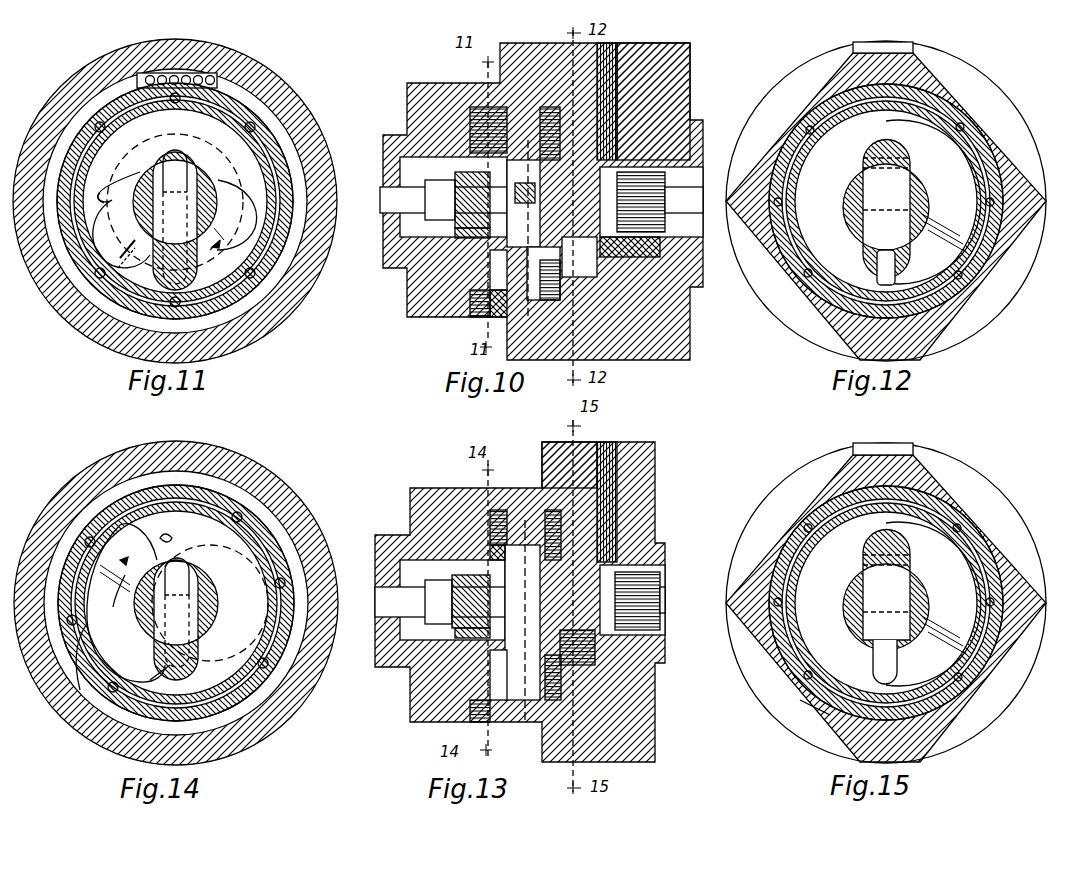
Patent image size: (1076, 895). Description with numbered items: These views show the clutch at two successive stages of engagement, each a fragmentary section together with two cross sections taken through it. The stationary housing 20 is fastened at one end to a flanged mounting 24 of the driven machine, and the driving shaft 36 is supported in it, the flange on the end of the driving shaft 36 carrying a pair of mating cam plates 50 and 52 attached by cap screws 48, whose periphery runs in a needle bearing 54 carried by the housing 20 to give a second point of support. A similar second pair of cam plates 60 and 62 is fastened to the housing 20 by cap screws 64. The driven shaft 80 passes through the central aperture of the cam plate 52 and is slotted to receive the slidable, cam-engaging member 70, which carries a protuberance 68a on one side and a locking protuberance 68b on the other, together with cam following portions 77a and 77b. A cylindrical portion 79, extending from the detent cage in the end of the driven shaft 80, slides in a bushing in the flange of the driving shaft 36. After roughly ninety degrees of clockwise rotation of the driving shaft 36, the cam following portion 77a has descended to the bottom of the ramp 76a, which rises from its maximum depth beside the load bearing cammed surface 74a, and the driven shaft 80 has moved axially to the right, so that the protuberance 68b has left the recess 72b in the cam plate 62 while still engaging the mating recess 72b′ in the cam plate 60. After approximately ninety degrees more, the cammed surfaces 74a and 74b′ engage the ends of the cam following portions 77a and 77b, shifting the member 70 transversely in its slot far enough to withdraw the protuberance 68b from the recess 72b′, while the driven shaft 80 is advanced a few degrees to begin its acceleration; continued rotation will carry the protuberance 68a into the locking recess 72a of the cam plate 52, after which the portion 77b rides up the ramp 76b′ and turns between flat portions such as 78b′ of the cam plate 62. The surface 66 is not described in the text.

In FIG. 11, the housing 20 is at (263, 102).
In FIG. 10, the housing 20 is at (505, 50).
In FIG. 12, the housing 20 is at (818, 95).
In FIG. 14, the housing 20 is at (238, 470).
In FIG. 13, the housing 20 is at (650, 510).
In FIG. 10, the flanged mounting 24 is at (676, 72).
In FIG. 12, the flanged mounting 24 is at (1012, 150).
In FIG. 15, the flanged mounting 24 is at (1010, 522).
In FIG. 10, the driving shaft 36 is at (412, 305).
In FIG. 13, the driving shaft 36 is at (412, 706).
In FIG. 11, the cap screws 48 is at (100, 127).
In FIG. 14, the cap screws 48 is at (240, 515).
In FIG. 11, the cam plate 50 is at (118, 118).
In FIG. 10, the cam plate 50 is at (470, 290).
In FIG. 14, the cam plate 50 is at (280, 530).
In FIG. 13, the cam plate 50 is at (470, 488).
In FIG. 11, the cam plate 52 is at (268, 140).
In FIG. 10, the cam plate 52 is at (505, 305).
In FIG. 14, the cam plate 52 is at (278, 562).
In FIG. 13, the cam plate 52 is at (505, 495).
In FIG. 11, the needle bearing 54 is at (218, 78).
In FIG. 10, the cam plate 60 is at (640, 240).
In FIG. 12, the cam plate 60 is at (960, 140).
In FIG. 13, the cam plate 60 is at (625, 475).
In FIG. 15, the cam plate 60 is at (898, 500).
In FIG. 10, the cam plate 62 is at (600, 300).
In FIG. 12, the cam plate 62 is at (918, 108).
In FIG. 13, the cam plate 62 is at (560, 470).
In FIG. 12, the cap screws 64 is at (940, 125).
In FIG. 15, the cap screws 64 is at (975, 540).
In FIG. 15, the ring 66 is at (915, 505).
In FIG. 11, the protuberance 68a is at (230, 158).
In FIG. 10, the protuberance 68a is at (537, 190).
In FIG. 14, the protuberance 68a is at (196, 560).
In FIG. 11, the protuberance 68b is at (240, 300).
In FIG. 10, the protuberance 68b is at (579, 257).
In FIG. 12, the protuberance 68b is at (880, 268).
In FIG. 13, the protuberance 68b is at (571, 638).
In FIG. 15, the protuberance 68b is at (880, 668).
In FIG. 11, the slidable member 70 is at (175, 221).
In FIG. 10, the slidable member 70 is at (540, 230).
In FIG. 12, the slidable member 70 is at (862, 228).
In FIG. 14, the slidable member 70 is at (176, 620).
In FIG. 13, the slidable member 70 is at (538, 620).
In FIG. 15, the slidable member 70 is at (862, 630).
In FIG. 11, the locking recess 72a is at (140, 178).
In FIG. 14, the locking recess 72a is at (172, 541).
In FIG. 10, the locking recess 72b is at (600, 285).
In FIG. 13, the locking recess 72b′ is at (610, 680).
In FIG. 15, the locking recess 72b′ is at (832, 702).
In FIG. 14, the load bearing cammed surface 74a is at (110, 690).
In FIG. 15, the cammed surface 74b′ is at (958, 522).
In FIG. 11, the ramp 76a is at (110, 280).
In FIG. 14, the ramp 76a is at (126, 603).
In FIG. 12, the ramp 76b′ is at (933, 202).
In FIG. 15, the ramp 76b′ is at (933, 604).
In FIG. 11, the cam following portion 77a is at (125, 258).
In FIG. 10, the cam following portion 77a is at (500, 300).
In FIG. 14, the cam following portion 77a is at (175, 680).
In FIG. 13, the cam following portion 77a is at (512, 700).
In FIG. 11, the cam following portion 77b is at (232, 165).
In FIG. 10, the cam following portion 77b is at (588, 150).
In FIG. 12, the cam following portion 77b is at (875, 178).
In FIG. 13, the cam following portion 77b is at (582, 545).
In FIG. 15, the cam following portion 77b is at (875, 580).
In FIG. 12, the flat portion 78b′ is at (812, 193).
In FIG. 15, the flat portion 78b′ is at (812, 595).
In FIG. 10, the cylindrical portion 79 is at (392, 198).
In FIG. 13, the cylindrical portion 79 is at (392, 610).
In FIG. 11, the driven shaft 80 is at (147, 158).
In FIG. 10, the driven shaft 80 is at (470, 250).
In FIG. 12, the driven shaft 80 is at (900, 157).
In FIG. 13, the driven shaft 80 is at (445, 640).
In FIG. 15, the driven shaft 80 is at (900, 557).